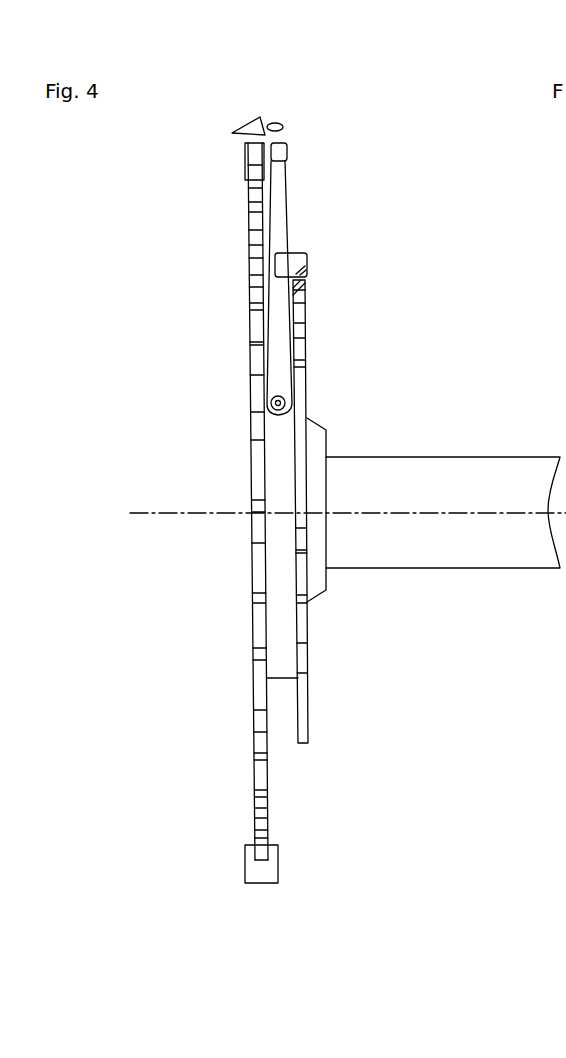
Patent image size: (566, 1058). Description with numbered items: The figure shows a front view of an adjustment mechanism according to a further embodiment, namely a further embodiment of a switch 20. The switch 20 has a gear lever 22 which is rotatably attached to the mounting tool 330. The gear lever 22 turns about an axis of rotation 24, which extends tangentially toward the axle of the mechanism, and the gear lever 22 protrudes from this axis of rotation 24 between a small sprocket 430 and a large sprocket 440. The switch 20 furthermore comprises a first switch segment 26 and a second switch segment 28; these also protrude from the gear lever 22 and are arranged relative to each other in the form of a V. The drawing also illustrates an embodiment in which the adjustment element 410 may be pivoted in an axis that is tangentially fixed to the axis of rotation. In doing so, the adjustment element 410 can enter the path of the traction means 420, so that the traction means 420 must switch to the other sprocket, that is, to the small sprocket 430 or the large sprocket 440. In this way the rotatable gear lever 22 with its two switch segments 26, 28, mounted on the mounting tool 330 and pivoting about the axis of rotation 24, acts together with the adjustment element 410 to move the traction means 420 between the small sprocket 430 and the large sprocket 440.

The switch 20 is at (324, 131).
The gear lever 22 is at (284, 340).
The axis of rotation 24 is at (286, 399).
The first switch segment 26 is at (308, 266).
The second switch segment 28 is at (275, 144).
The mounting tool 330 is at (277, 465).
The adjustment element 410 is at (306, 254).
The traction means 420 is at (258, 152).
The small sprocket 430 is at (304, 282).
The large sprocket 440 is at (248, 222).